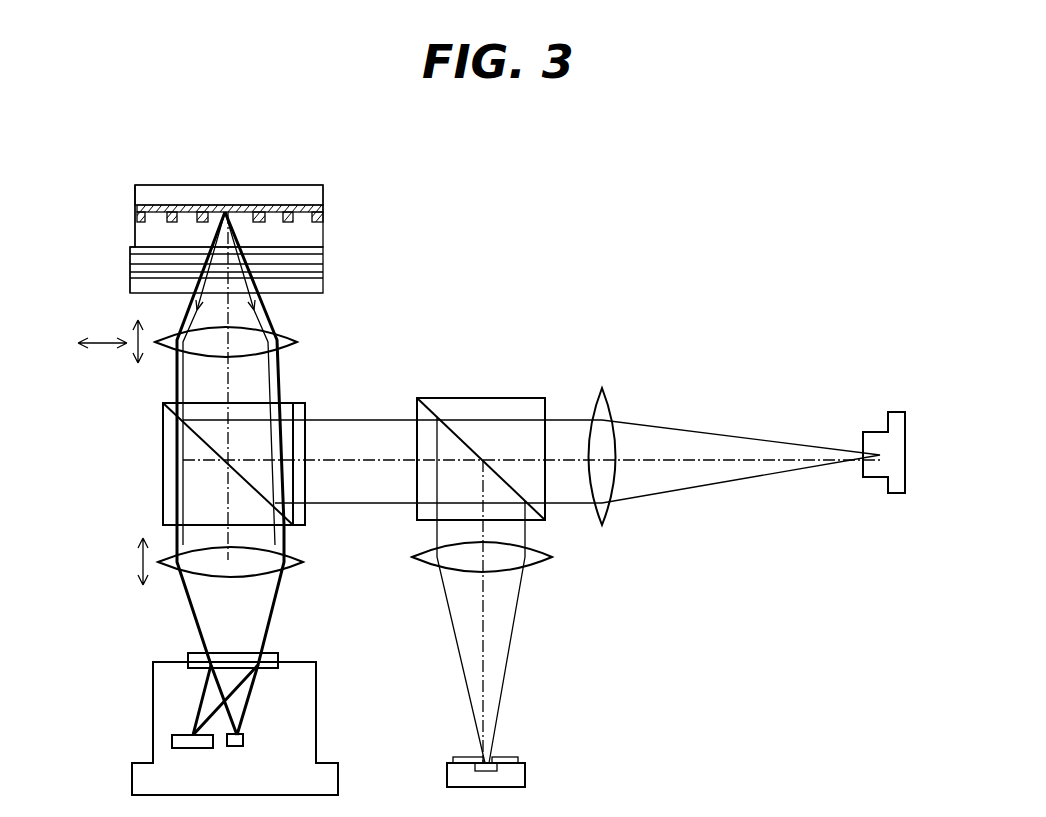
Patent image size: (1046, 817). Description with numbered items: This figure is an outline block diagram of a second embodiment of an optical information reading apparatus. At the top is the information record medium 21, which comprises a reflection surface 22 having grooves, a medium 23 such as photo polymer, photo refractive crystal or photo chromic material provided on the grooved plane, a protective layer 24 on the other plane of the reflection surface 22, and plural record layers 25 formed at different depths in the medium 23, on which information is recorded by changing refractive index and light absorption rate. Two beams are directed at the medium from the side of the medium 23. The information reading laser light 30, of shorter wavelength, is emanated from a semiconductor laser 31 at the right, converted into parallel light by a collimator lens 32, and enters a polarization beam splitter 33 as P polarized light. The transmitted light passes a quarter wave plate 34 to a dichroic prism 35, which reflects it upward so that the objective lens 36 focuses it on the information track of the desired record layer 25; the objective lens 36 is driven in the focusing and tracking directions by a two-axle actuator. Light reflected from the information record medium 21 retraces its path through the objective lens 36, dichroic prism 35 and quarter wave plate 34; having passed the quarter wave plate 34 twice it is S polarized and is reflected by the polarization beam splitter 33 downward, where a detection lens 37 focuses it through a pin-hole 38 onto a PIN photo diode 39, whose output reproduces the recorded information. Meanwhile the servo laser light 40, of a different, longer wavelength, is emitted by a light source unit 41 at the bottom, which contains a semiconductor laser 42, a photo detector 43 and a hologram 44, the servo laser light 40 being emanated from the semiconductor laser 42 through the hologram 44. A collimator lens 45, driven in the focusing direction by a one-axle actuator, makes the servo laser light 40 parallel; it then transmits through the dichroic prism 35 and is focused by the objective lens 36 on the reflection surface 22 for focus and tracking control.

The information record medium 21 is at (333, 201).
The reflection surface 22 is at (197, 207).
The medium 23 is at (130, 233).
The protective layer 24 is at (287, 193).
The record layers 25 is at (323, 237).
The information reading laser light 30 is at (730, 430).
The semiconductor laser 31 is at (893, 430).
The collimator lens 32 is at (605, 418).
The polarization beam splitter 33 is at (520, 398).
The 1/4 wave plate 34 is at (300, 403).
The dichroic prism 35 is at (163, 468).
The objective lens 36 is at (215, 348).
The detection lens 37 is at (510, 562).
The pin-hole 38 is at (490, 753).
The PIN photo diode 39 is at (513, 777).
The servo laser light 40 is at (275, 598).
The light source unit 41 is at (160, 688).
The semiconductor laser 42 is at (243, 737).
The photo detector 43 is at (173, 740).
The hologram 44 is at (268, 660).
The collimator lens 45 is at (217, 567).